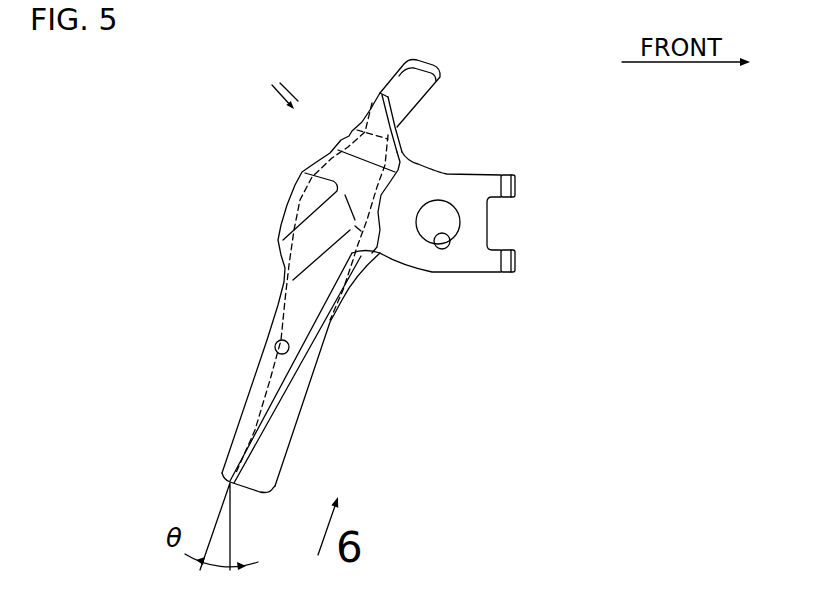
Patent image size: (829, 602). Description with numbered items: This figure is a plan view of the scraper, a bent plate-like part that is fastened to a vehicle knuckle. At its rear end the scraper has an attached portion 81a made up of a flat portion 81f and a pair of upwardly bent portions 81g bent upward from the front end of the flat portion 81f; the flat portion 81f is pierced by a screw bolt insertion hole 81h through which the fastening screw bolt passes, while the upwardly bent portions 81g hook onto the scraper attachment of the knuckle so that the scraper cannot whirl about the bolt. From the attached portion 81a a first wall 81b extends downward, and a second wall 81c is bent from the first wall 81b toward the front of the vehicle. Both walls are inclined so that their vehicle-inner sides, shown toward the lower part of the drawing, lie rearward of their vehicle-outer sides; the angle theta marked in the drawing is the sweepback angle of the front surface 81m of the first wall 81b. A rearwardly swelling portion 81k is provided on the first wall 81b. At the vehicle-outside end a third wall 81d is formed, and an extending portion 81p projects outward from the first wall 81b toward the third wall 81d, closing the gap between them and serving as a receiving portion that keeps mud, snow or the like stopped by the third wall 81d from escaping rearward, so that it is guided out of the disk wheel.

The attached portion 81a is at (466, 168).
The first wall 81b is at (284, 192).
The second wall 81c is at (283, 428).
The third wall 81d is at (443, 88).
The flat portion 81f is at (417, 257).
The upwardly bent portions 81g is at (516, 184).
The screw bolt insertion hole 81h is at (449, 244).
The rearwardly swelling portion 81k is at (279, 228).
The front surface 81m is at (276, 342).
The extending portion 81p is at (376, 99).